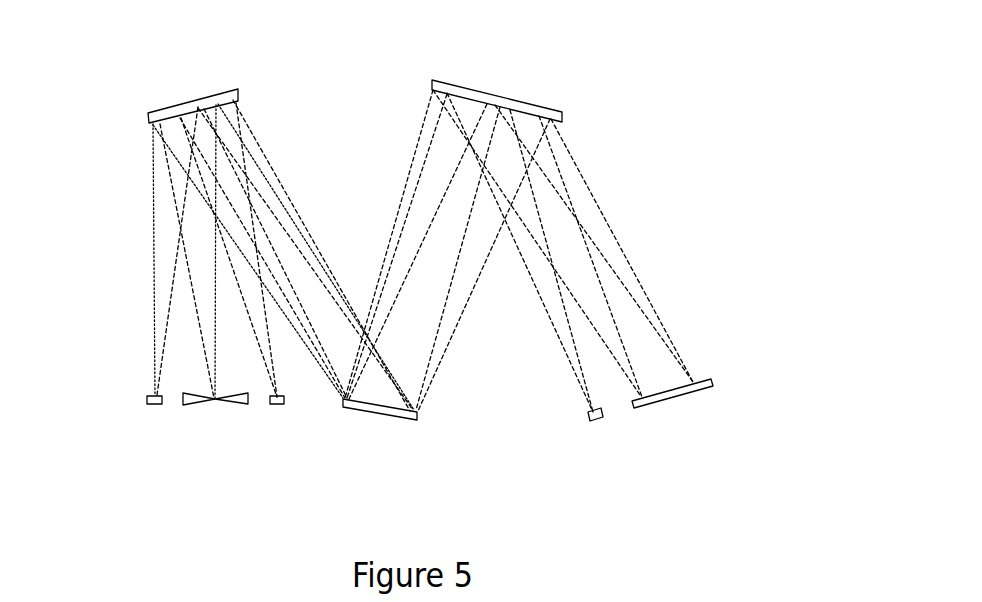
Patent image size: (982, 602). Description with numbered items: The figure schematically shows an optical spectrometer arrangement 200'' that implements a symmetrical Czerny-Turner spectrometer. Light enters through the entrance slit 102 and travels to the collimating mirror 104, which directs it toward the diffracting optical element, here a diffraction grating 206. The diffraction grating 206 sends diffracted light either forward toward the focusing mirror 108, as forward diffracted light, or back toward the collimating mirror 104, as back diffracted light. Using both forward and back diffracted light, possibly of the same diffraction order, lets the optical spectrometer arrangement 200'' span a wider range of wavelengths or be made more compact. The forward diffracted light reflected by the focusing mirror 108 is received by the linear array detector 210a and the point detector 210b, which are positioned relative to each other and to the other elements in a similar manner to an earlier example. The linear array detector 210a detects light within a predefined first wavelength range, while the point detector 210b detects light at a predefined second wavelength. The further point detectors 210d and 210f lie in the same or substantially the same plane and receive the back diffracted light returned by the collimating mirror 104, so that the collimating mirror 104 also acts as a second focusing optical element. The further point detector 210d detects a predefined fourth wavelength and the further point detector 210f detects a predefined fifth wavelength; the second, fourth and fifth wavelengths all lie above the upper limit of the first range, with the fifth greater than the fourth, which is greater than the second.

The optical spectrometer arrangement 200'' is at (423, 218).
The collimating mirror 104 is at (148, 116).
The focusing mirror 108 is at (562, 118).
The diffraction grating 206 is at (395, 419).
The linear array detector 210a is at (714, 385).
The point detector 210b is at (588, 415).
The further point detector 210d is at (280, 405).
The further point detector 210f is at (157, 405).
The entrance slit 102 is at (237, 405).